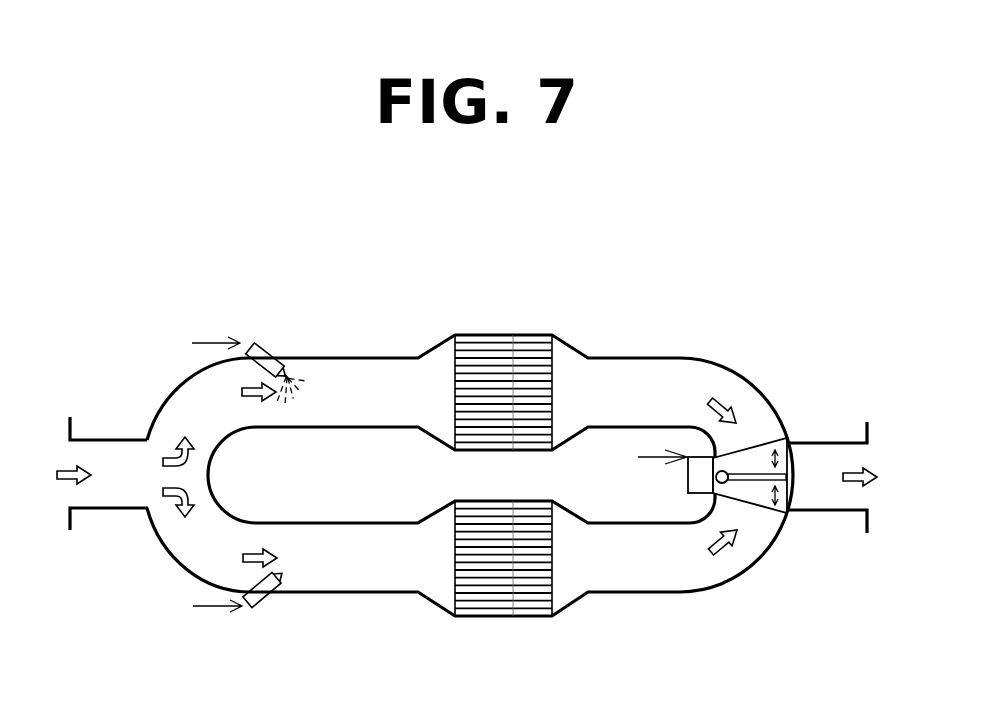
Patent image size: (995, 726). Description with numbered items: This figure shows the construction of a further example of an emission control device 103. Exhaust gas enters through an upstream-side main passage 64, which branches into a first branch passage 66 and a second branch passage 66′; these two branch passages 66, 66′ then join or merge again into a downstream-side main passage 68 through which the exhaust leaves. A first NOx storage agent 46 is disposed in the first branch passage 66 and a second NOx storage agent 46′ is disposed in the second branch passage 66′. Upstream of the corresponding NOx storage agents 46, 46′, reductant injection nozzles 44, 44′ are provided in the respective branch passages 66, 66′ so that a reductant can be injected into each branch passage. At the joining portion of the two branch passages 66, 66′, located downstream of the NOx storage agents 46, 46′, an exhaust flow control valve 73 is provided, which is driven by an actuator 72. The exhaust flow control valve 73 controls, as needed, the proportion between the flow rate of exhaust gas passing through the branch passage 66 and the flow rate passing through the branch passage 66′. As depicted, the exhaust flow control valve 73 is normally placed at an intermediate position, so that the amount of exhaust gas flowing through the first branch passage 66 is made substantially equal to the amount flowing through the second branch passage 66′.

The emission control device 103 is at (735, 291).
The upstream-side main passage 64 is at (113, 454).
The downstream-side main passage 68 is at (823, 460).
The first branch passage 66 is at (362, 372).
The second branch passage 66′ is at (362, 578).
The first NOx storage agent 46 is at (543, 388).
The second NOx storage agent 46′ is at (543, 563).
The reductant injection nozzle 44 is at (268, 350).
The reductant injection nozzle 44′ is at (265, 600).
The actuator 72 is at (700, 482).
The exhaust flow control valve 73 is at (748, 457).